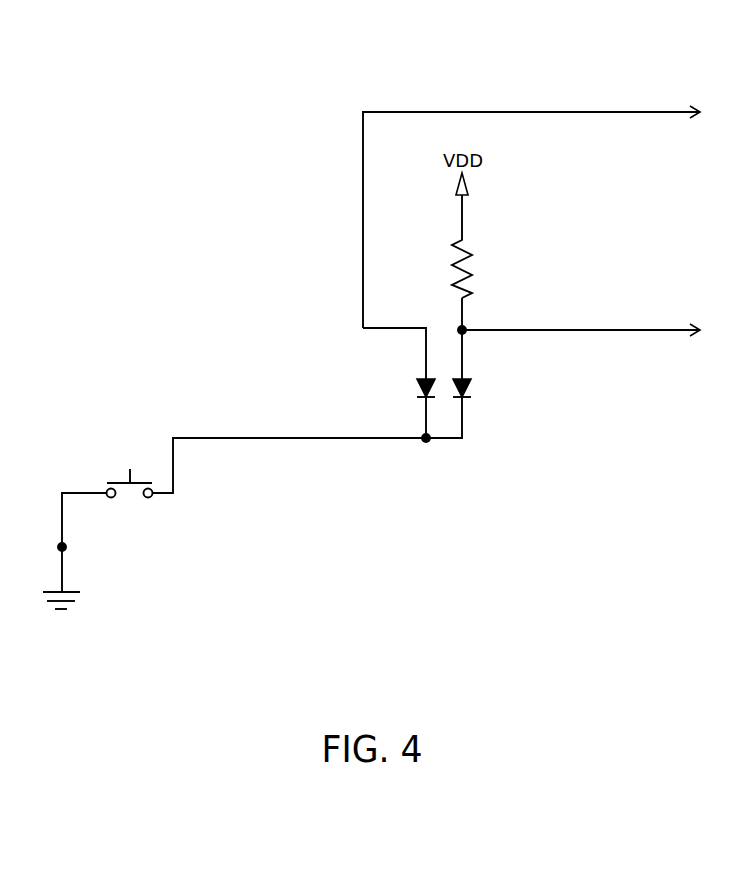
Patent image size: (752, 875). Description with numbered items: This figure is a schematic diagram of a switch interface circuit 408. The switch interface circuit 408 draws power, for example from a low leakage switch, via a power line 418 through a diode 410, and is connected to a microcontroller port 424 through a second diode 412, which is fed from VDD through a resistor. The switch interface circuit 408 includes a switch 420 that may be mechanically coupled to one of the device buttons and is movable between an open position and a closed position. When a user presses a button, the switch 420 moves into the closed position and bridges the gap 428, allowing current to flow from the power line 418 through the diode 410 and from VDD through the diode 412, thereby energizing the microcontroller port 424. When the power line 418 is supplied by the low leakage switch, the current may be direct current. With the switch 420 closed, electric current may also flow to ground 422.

The switch interface circuit 408 is at (538, 24).
The diode 410 is at (418, 386).
The diode 412 is at (471, 383).
The power line 418 is at (668, 110).
The switch 420 is at (135, 483).
The ground 422 is at (87, 603).
The microcontroller port 424 is at (680, 328).
The gap 428 is at (128, 499).